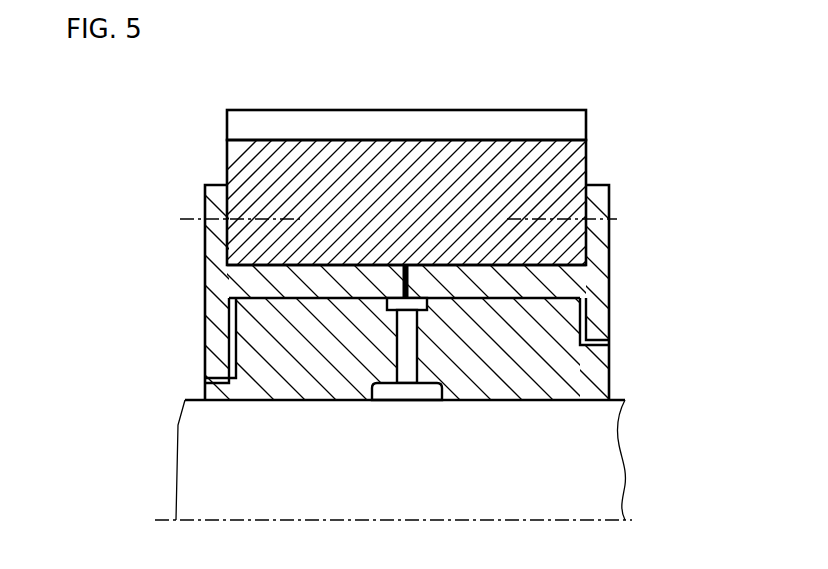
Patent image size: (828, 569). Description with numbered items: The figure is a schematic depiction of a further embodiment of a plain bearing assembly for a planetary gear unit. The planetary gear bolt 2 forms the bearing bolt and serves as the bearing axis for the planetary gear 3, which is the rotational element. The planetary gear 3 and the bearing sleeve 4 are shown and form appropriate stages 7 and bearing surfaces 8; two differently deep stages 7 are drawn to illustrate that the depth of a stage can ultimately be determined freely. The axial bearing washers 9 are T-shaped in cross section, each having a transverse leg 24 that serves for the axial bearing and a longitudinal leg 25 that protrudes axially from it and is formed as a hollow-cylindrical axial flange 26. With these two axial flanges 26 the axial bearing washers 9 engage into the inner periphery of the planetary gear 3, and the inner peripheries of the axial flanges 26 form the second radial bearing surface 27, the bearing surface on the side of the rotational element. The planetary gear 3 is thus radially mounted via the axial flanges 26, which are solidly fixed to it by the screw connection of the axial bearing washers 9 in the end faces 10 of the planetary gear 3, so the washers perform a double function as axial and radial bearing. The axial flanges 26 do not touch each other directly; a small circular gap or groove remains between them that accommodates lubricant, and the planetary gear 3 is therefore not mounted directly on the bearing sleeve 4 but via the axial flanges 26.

The planetary gear bolt 2 is at (605, 438).
The planetary gear 3 is at (403, 177).
The bearing sleeve 4 is at (350, 394).
The stages 7 is at (246, 388).
The bearing surfaces 8 is at (268, 377).
The axial bearing washers 9 is at (213, 278).
The end faces 10 is at (227, 158).
The transverse leg 24 is at (222, 345).
The longitudinal leg 25 is at (303, 245).
The axial flange 26 is at (338, 264).
The second radial bearing surface 27 is at (257, 268).